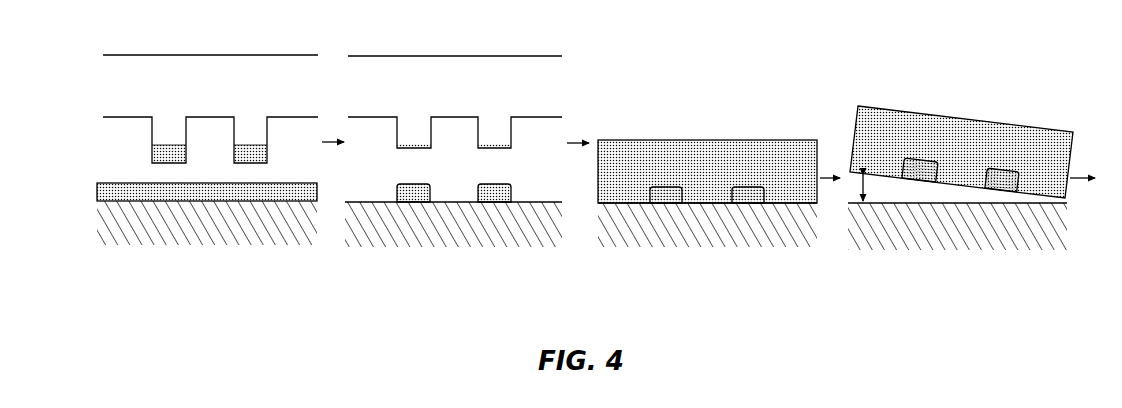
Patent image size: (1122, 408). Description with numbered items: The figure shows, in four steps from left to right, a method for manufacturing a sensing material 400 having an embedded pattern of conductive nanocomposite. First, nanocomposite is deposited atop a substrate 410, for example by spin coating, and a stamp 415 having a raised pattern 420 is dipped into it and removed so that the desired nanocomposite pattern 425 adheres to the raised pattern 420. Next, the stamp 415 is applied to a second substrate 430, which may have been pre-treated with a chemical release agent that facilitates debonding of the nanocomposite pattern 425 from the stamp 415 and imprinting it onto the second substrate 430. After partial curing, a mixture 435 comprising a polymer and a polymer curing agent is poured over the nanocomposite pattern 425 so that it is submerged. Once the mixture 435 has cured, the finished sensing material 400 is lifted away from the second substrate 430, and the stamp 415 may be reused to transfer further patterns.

The sensing material 400 is at (887, 82).
The substrate 410 is at (197, 222).
The stamp 415 is at (198, 80).
The raised pattern 420 is at (175, 122).
The nanocomposite pattern 425 is at (151, 150).
The second substrate 430 is at (443, 225).
The mixture 435 is at (685, 153).